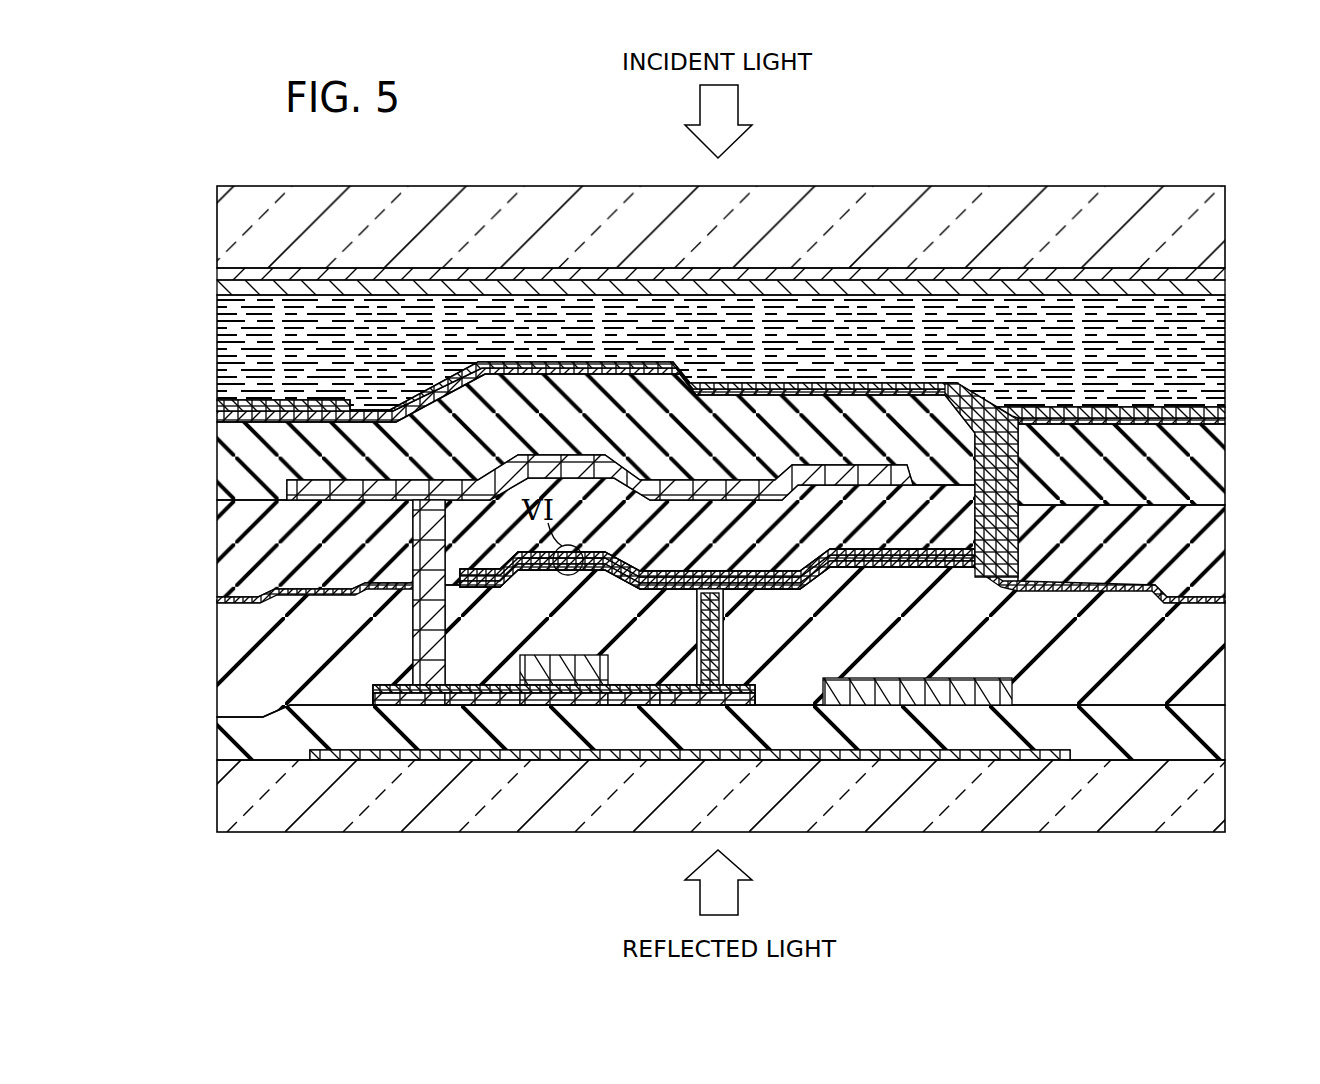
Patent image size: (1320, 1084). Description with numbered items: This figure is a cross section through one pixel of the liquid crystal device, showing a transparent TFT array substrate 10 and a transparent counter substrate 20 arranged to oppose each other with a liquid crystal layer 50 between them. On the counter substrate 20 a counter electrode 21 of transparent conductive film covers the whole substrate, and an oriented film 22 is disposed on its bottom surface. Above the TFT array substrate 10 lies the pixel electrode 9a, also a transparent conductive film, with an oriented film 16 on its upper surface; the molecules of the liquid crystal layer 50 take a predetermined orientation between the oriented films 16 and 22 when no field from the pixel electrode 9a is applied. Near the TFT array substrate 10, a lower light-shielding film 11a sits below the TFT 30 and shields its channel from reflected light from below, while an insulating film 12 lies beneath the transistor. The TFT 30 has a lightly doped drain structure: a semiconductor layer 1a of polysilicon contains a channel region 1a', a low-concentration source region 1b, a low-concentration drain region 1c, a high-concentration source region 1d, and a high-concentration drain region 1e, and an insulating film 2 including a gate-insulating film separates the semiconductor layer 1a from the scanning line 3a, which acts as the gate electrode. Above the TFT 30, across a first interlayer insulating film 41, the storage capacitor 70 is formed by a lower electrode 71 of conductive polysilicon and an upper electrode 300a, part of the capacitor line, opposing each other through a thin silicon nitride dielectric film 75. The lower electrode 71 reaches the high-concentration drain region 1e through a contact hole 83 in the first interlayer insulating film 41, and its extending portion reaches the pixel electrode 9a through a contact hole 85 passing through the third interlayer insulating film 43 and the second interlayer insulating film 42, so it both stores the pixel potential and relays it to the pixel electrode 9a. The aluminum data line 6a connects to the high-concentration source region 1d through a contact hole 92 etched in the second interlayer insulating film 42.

The counter substrate 20 is at (1212, 212).
The counter electrode 21 is at (1222, 274).
The oriented film 22 is at (1222, 288).
The liquid crystal layer 50 is at (1215, 352).
The oriented film 16 is at (1222, 410).
The pixel electrode 9a is at (217, 412).
The third interlayer insulating film 43 is at (1222, 480).
The second interlayer insulating film 42 is at (1222, 540).
The first interlayer insulating film 41 is at (1212, 628).
The dielectric film 75 is at (217, 599).
The storage capacitor 70 is at (944, 578).
The upper electrode 300a is at (842, 556).
The lower electrode 71 is at (816, 590).
The data line 6a is at (662, 486).
The contact hole 85 is at (1007, 482).
The contact hole 83 is at (717, 660).
The contact hole 92 is at (420, 650).
The scanning line 3a is at (582, 656).
The insulating film 2 is at (468, 684).
The semiconductor layer 1a is at (545, 715).
The channel region 1a' is at (564, 785).
The low-concentration source region 1b is at (488, 706).
The low-concentration drain region 1c is at (630, 706).
The high-concentration source region 1d is at (430, 706).
The high-concentration drain region 1e is at (690, 706).
The TFT 30 is at (668, 872).
The base insulating film 12 is at (1212, 722).
The lower light-shielding film 11a is at (1030, 750).
The TFT array substrate 10 is at (1212, 794).